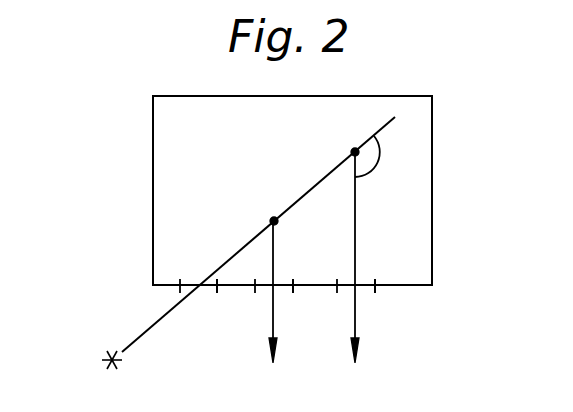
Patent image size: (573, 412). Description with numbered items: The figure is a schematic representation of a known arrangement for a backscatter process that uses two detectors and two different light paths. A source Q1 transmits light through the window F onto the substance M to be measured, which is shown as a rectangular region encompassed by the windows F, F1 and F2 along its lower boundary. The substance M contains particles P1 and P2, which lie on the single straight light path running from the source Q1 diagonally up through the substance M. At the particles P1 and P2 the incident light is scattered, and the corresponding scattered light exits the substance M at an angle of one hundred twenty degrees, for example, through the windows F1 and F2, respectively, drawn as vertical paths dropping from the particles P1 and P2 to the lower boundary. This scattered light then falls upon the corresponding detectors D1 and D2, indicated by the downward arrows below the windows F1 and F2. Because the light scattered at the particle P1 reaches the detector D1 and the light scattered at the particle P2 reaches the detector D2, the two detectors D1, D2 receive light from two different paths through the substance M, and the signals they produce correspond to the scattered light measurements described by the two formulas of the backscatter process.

The substance to be measured M is at (177, 137).
The source Q1 is at (95, 376).
The particle P1 is at (271, 219).
The particle P2 is at (352, 150).
The detector D1 is at (277, 311).
The detector D2 is at (357, 276).
The window F is at (203, 289).
The window F1 is at (280, 288).
The window F2 is at (362, 288).